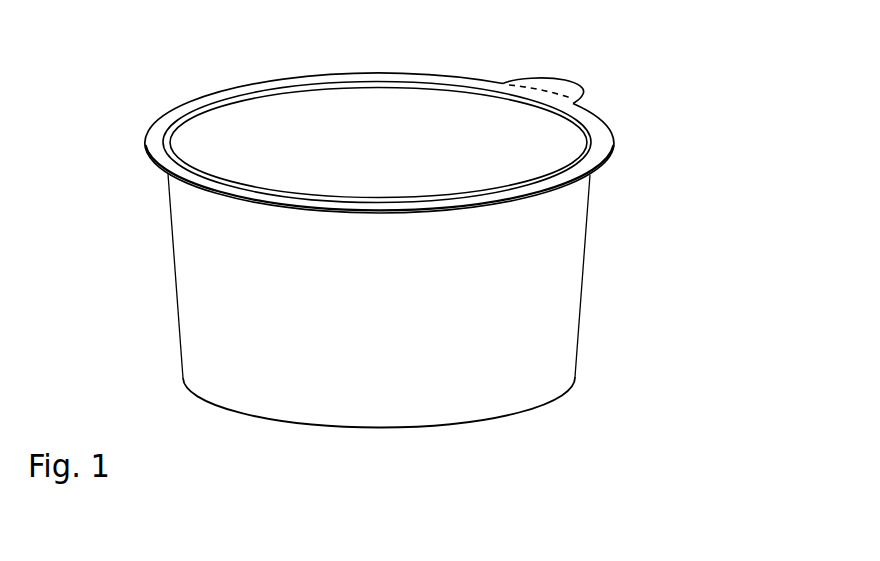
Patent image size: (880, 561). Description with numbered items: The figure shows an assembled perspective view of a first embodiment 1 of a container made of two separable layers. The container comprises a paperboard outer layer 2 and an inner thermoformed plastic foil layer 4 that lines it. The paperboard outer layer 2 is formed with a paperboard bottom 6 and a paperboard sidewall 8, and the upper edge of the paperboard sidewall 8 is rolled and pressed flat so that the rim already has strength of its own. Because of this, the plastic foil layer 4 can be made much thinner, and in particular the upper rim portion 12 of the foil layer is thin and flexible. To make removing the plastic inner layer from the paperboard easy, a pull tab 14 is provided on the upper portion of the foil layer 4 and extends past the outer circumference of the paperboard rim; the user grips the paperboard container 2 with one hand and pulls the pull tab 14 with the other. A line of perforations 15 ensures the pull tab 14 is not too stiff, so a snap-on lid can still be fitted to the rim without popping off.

The first embodiment of a container 1 is at (604, 73).
The paperboard outer layer 2 is at (648, 283).
The inner thermoformed plastic foil layer 4 is at (220, 125).
The paperboard bottom 6 is at (350, 430).
The paperboard sidewall 8 is at (232, 273).
The upper rim portion of the foil layer 12 is at (604, 138).
The pull tab 14 is at (552, 80).
The line of perforations 15 is at (549, 89).